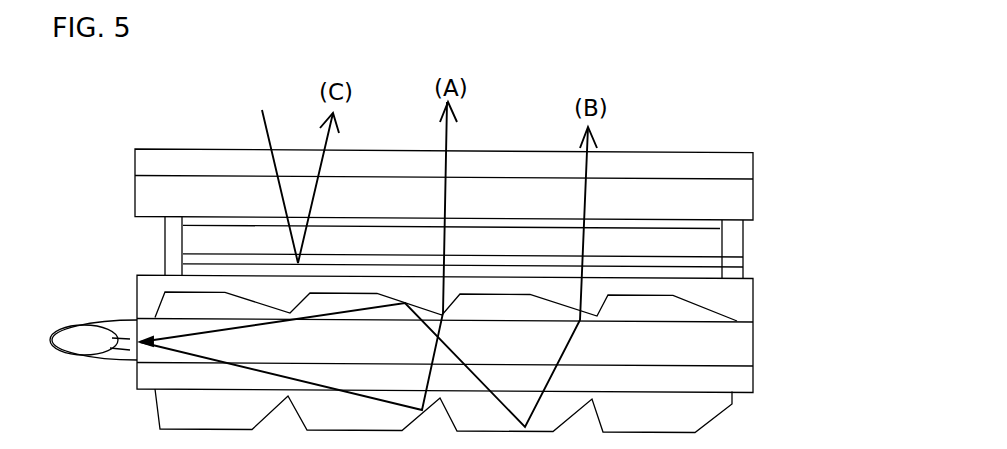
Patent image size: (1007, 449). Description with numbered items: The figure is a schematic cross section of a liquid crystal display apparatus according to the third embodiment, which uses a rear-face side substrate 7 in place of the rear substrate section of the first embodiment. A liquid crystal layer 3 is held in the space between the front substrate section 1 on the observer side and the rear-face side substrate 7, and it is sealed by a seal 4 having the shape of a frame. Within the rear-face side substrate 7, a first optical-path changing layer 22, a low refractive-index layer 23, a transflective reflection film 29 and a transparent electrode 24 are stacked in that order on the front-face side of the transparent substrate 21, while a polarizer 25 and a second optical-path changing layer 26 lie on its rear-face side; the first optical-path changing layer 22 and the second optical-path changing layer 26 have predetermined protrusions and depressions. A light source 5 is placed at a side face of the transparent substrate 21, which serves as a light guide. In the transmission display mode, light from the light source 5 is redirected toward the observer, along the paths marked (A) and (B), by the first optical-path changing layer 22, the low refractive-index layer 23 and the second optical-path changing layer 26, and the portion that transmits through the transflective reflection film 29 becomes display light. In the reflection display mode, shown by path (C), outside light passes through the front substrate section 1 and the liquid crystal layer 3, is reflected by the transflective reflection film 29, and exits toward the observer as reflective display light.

The front substrate section 1 is at (793, 190).
The liquid crystal layer 3 is at (187, 237).
The seal 4 is at (168, 257).
The light source 5 is at (68, 325).
The rear-face side substrate 7 is at (498, 334).
The transparent substrate 21 is at (749, 347).
The first optical-path changing layer 22 is at (738, 321).
The low refractive-index layer 23 is at (748, 298).
The transparent electrode 24 is at (720, 262).
The polarizer 25 is at (749, 378).
The second optical-path changing layer 26 is at (487, 411).
The transflective reflection film 29 is at (717, 273).